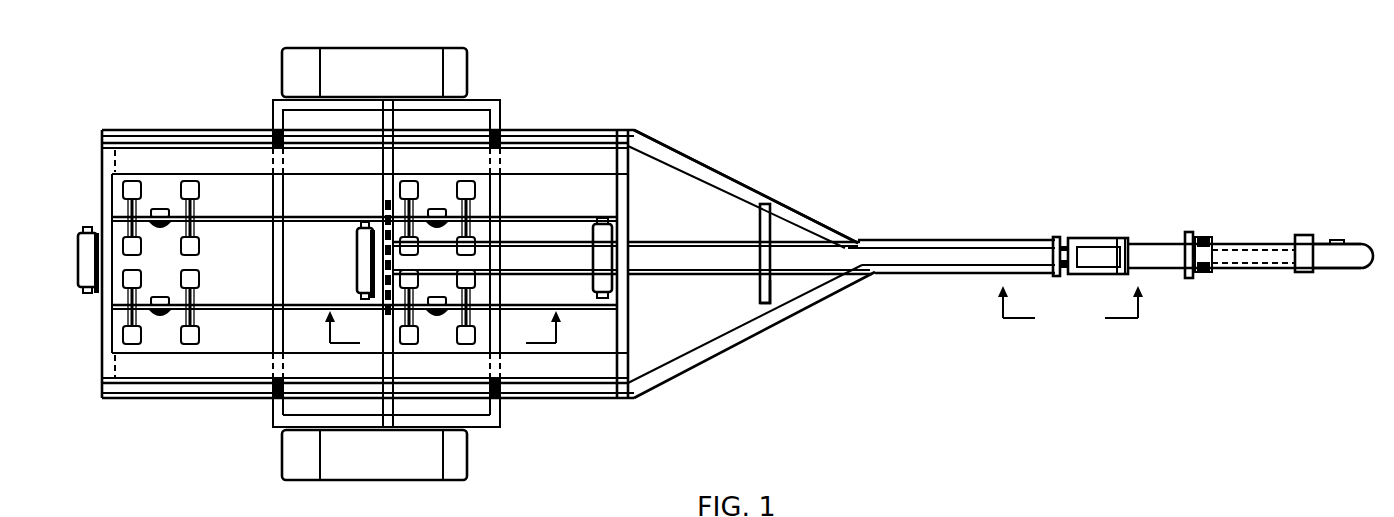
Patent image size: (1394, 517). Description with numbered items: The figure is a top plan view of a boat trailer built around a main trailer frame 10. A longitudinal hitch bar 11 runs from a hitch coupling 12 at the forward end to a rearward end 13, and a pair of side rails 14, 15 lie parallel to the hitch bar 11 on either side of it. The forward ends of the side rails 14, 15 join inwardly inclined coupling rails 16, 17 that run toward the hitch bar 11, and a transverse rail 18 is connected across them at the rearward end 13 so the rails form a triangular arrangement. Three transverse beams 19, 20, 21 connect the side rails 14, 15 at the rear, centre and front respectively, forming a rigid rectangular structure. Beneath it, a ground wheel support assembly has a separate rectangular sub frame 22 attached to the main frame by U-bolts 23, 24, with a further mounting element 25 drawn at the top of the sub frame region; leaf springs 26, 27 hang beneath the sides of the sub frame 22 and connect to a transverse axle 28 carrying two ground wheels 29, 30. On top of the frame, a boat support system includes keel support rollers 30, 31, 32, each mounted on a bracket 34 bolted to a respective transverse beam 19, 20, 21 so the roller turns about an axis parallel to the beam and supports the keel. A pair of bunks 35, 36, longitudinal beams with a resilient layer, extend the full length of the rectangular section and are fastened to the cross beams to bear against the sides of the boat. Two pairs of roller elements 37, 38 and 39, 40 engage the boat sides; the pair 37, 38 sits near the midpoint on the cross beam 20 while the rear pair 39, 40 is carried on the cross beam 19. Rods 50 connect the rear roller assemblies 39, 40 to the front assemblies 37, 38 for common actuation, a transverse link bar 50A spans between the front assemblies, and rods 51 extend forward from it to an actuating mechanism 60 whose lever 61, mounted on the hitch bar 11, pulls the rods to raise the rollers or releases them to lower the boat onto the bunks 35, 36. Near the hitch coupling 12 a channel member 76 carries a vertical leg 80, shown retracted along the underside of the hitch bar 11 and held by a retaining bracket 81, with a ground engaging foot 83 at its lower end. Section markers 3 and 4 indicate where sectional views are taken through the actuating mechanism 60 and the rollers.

The main trailer frame 10 is at (822, 174).
The longitudinal hitch bar 11 is at (928, 258).
The hitch coupling 12 is at (1366, 266).
The rearward end 13 is at (757, 258).
The side rail 14 is at (582, 126).
The side rail 15 is at (585, 401).
The coupling rail 16 is at (722, 170).
The coupling rail 17 is at (718, 352).
The transverse rail 18 is at (778, 299).
The transverse beam 19 is at (103, 184).
The transverse beam 20 is at (381, 191).
The transverse beam 21 is at (630, 186).
The rectangular sub frame 22 is at (256, 434).
The U-bolt 23 is at (270, 133).
The U-bolt 24 is at (501, 134).
The fender base plate 25 is at (357, 86).
The leaf spring 26 is at (475, 426).
The leaf spring 27 is at (473, 99).
The transverse axle 28 is at (398, 412).
The ground wheel 29 is at (410, 470).
The ground wheel 30 is at (82, 283).
The keel support roller 31 is at (360, 257).
The keel support roller 32 is at (593, 255).
The bracket 34 is at (603, 223).
The bunk 35 is at (168, 163).
The bunk 36 is at (152, 382).
The roller element 37 is at (478, 217).
The roller element 38 is at (478, 311).
The roller element 39 is at (204, 207).
The roller element 40 is at (202, 292).
The rod 50 is at (266, 222).
The transverse link bar 50A is at (357, 239).
The rod 51 is at (706, 241).
The actuating mechanism 60 is at (1073, 230).
The lever 61 is at (1058, 244).
The channel member 76 is at (1310, 236).
The vertical leg 80 is at (1236, 247).
The retaining bracket 81 is at (1205, 273).
The ground engaging foot 83 is at (1186, 233).
The section line 3- 3 is at (1075, 300).
The section line 4- 4 is at (445, 327).